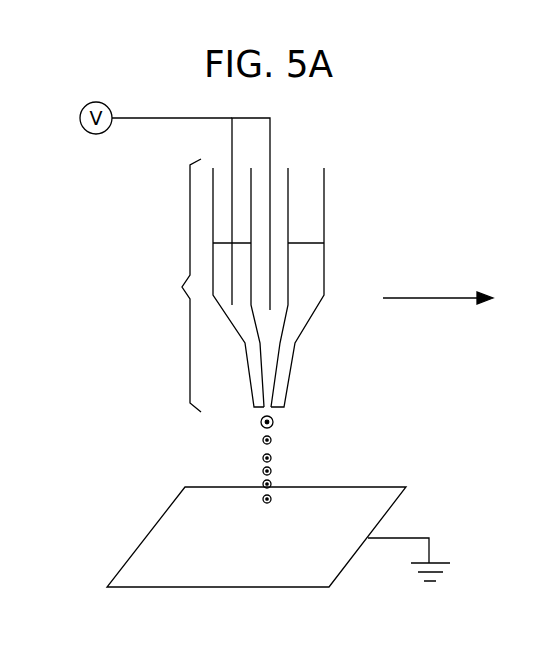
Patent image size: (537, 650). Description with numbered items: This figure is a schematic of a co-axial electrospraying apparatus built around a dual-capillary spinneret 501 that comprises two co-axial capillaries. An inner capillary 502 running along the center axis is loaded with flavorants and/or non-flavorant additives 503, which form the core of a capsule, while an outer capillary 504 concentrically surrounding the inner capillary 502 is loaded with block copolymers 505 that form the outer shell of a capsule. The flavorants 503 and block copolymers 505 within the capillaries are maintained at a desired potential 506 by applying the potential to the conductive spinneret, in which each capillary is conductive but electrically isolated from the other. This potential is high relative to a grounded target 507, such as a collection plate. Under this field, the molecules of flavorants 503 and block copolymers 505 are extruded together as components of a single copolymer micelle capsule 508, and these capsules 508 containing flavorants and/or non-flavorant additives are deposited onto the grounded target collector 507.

The spinneret 501 is at (276, 259).
The inner capillary 502 is at (288, 177).
The flavorants and/or non-flavorant additives 503 is at (288, 241).
The outer capillary 504 is at (324, 230).
The block copolymers 505 is at (301, 296).
The potential 506 is at (270, 139).
The grounded target 507 is at (143, 540).
The copolymer micelle capsule 508 is at (293, 455).